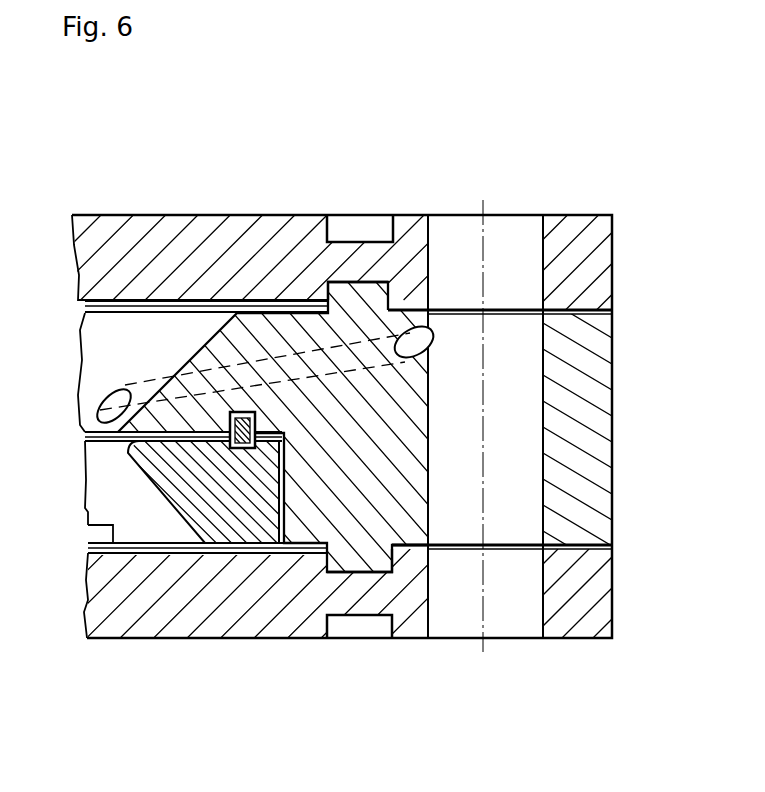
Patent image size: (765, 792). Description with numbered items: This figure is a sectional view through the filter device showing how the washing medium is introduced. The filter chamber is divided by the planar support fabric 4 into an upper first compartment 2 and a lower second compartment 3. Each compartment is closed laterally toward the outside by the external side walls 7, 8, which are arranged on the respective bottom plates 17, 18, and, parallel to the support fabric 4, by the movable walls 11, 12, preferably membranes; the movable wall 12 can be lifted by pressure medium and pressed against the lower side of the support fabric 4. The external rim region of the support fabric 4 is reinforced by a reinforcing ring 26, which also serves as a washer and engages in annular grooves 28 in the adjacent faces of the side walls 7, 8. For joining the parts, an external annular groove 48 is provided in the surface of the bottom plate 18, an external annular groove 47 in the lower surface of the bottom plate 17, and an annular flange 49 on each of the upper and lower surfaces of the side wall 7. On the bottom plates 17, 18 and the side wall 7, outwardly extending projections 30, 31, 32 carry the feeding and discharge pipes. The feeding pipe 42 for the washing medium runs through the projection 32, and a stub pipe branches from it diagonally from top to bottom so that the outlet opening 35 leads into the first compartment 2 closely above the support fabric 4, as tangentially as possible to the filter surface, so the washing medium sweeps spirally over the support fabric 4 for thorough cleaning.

The first compartment 2 is at (125, 328).
The second compartment 3 is at (143, 523).
The support fabric 4 is at (100, 437).
The external side wall 7 is at (268, 330).
The external side wall 8 is at (158, 469).
The movable wall 11 is at (100, 298).
The movable wall 12 is at (88, 527).
The bottom plate 17 is at (186, 228).
The bottom plate 18 is at (122, 618).
The reinforcing ring 26 is at (246, 448).
The annular grooves 28 is at (241, 448).
The projection 30 is at (578, 250).
The projection 31 is at (573, 618).
The projection 32 is at (582, 389).
The outlet opening 35 is at (100, 405).
The feeding pipe 42 is at (522, 475).
The external annular groove 47 is at (377, 281).
The external annular groove 48 is at (337, 240).
The annular flange 49 is at (348, 294).